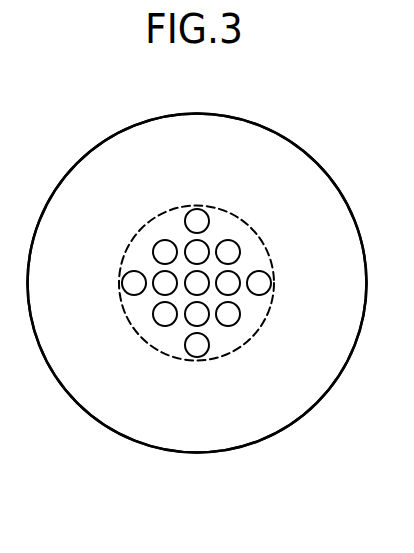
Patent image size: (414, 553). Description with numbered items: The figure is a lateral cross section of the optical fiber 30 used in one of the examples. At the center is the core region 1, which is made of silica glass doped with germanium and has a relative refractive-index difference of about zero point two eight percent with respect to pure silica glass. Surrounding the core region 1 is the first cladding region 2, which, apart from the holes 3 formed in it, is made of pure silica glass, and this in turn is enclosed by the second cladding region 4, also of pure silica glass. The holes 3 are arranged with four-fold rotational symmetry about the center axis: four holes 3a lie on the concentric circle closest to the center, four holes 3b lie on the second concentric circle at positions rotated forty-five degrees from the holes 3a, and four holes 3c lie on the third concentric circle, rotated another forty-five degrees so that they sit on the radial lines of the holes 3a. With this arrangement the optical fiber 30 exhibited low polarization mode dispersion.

The optical fiber 30 is at (243, 120).
The second cladding region 4 is at (332, 381).
The first cladding region 2 is at (268, 250).
The holes 3 is at (198, 199).
The holes 3a is at (166, 283).
The holes 3b is at (166, 313).
The holes 3c is at (197, 345).
The core region 1 is at (203, 277).